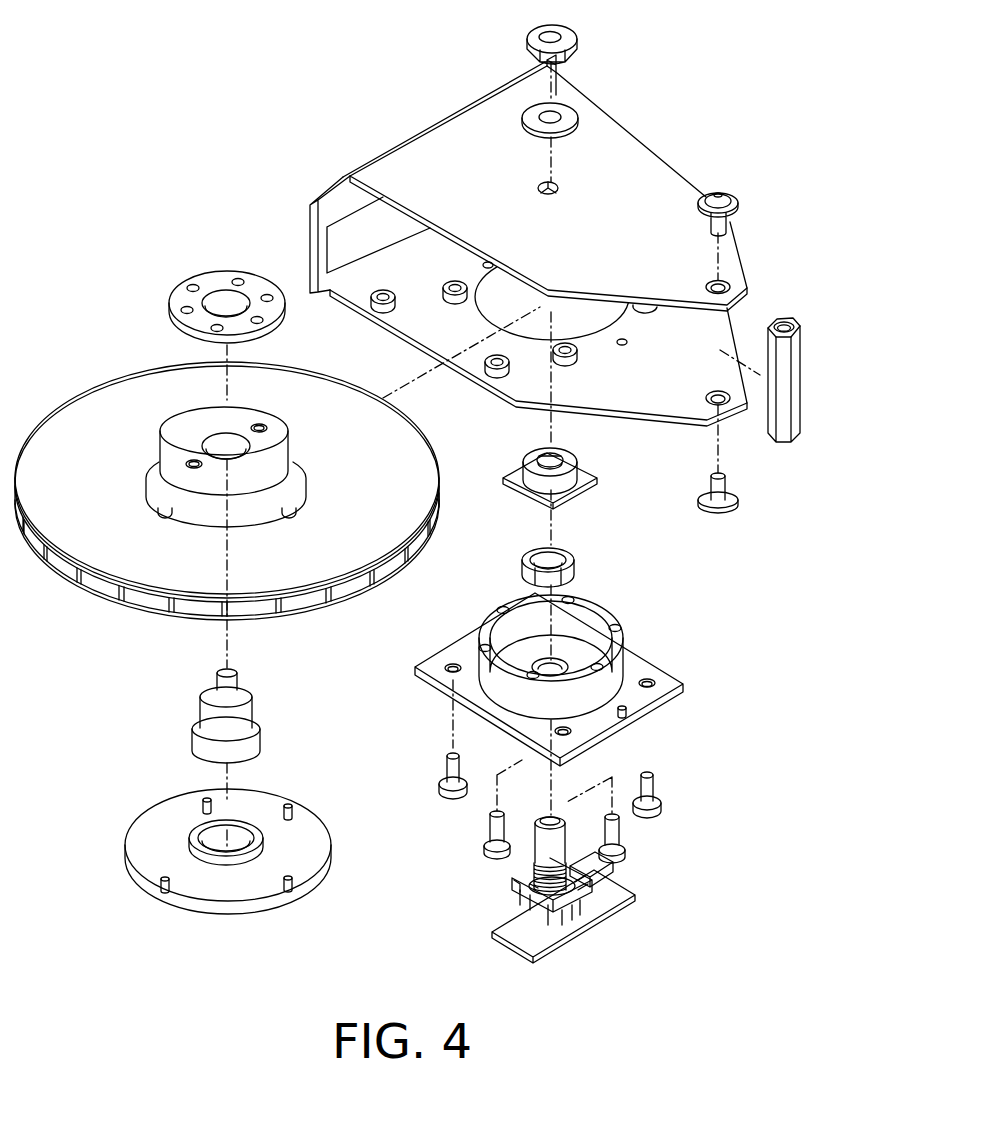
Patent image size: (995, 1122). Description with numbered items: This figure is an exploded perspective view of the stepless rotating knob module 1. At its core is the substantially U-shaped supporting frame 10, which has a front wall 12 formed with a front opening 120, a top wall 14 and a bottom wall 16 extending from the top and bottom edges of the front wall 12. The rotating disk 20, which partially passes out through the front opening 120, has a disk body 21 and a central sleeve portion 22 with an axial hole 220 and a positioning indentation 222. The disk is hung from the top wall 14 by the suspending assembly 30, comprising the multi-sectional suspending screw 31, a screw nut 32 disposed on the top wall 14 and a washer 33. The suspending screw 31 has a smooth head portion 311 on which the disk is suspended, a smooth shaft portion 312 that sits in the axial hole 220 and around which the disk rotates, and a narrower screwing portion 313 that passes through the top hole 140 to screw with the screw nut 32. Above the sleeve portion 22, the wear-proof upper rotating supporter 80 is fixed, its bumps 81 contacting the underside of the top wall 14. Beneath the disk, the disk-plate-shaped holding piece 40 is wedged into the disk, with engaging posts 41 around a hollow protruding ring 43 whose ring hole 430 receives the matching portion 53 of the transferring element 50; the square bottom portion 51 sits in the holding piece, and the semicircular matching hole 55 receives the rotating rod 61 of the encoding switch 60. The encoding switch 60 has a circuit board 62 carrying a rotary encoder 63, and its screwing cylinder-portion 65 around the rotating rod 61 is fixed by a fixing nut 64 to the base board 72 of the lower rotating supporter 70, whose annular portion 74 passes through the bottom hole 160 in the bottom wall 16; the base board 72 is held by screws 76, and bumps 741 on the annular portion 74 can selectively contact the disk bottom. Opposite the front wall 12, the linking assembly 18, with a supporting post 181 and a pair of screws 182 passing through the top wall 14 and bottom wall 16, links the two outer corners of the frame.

The stepless rotating knob module 1 is at (152, 30).
The supporting frame 10 is at (658, 142).
The front wall 12 is at (333, 212).
The front opening 120 is at (340, 243).
The top wall 14 is at (467, 143).
The top hole 140 is at (538, 189).
The bottom wall 16 is at (518, 378).
The bottom hole 160 is at (500, 313).
The linking assembly 18 is at (787, 316).
The supporting post 181 is at (785, 434).
The screws 182 is at (730, 200).
The rotating disk 20 is at (105, 382).
The disk body 21 is at (152, 388).
The sleeve portion 22 is at (183, 436).
The axial hole 220 is at (218, 440).
The positioning indentation 222 is at (260, 425).
The suspending assembly 30 is at (650, 35).
The suspending screw 31 is at (188, 710).
The head portion 311 is at (250, 750).
The shaft portion 312 is at (245, 718).
The screwing portion 313 is at (237, 681).
The screw nut 32 is at (577, 33).
The washer 33 is at (572, 112).
The holding piece 40 is at (130, 812).
The engaging posts 41 is at (292, 880).
The protruding ring 43 is at (235, 865).
The ring hole 430 is at (235, 830).
The transferring element 50 is at (605, 478).
The bottom portion 51 is at (535, 502).
The matching portion 53 is at (538, 458).
The matching hole 55 is at (560, 462).
The encoding switch 60 is at (643, 545).
The rotating rod 61 is at (545, 840).
The circuit board 62 is at (615, 893).
The rotary encoder 63 is at (530, 909).
The fixing nut 64 is at (572, 553).
The screwing cylinder-portion 65 is at (530, 876).
The lower rotating supporter 70 is at (675, 657).
The base board 72 is at (640, 701).
The annular portion 74 is at (598, 615).
The bumps 741 is at (486, 645).
The screws 76 is at (612, 831).
The upper rotating supporter 80 is at (175, 278).
The bumps 81 is at (238, 280).